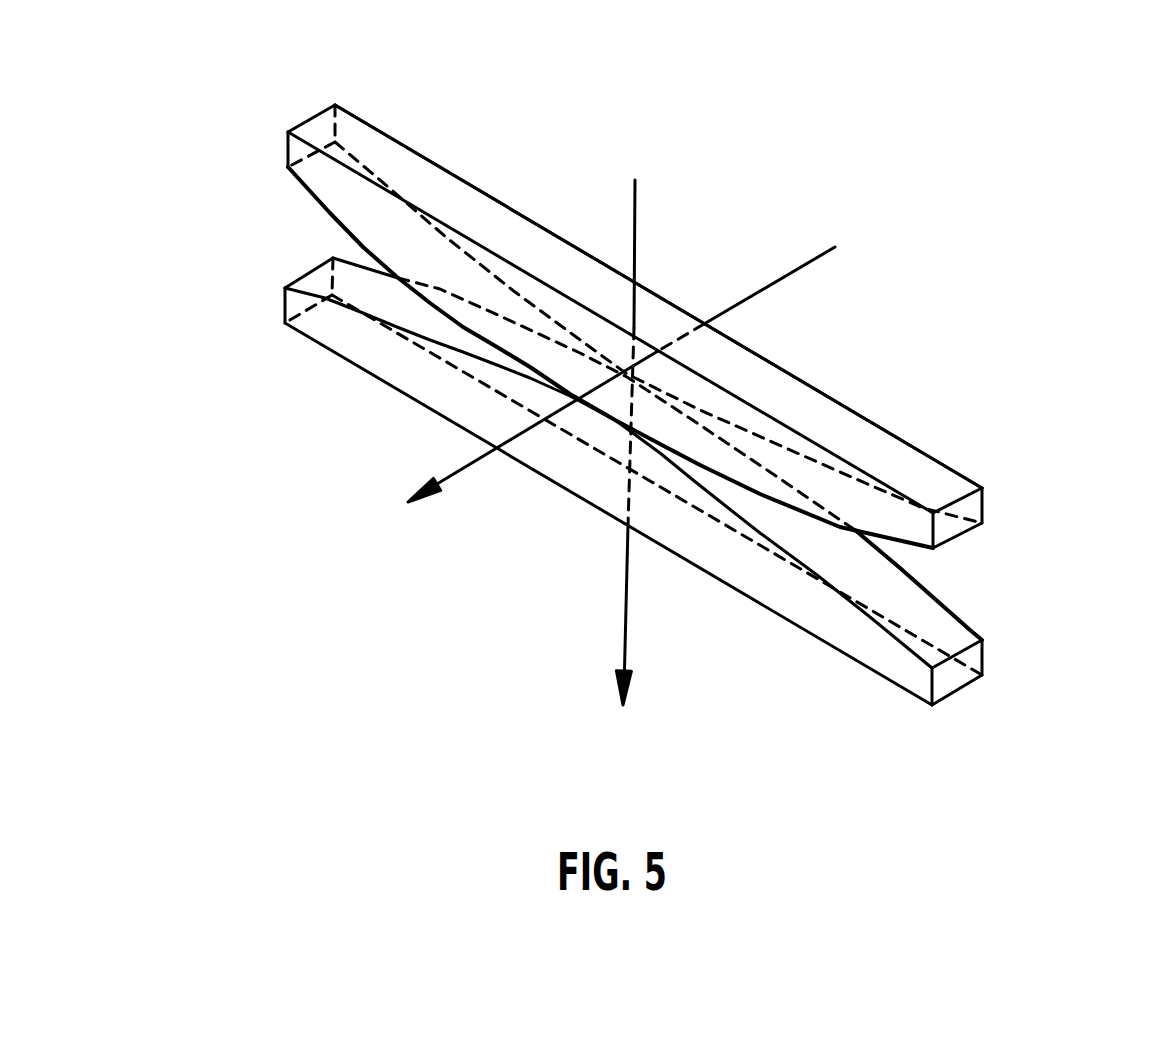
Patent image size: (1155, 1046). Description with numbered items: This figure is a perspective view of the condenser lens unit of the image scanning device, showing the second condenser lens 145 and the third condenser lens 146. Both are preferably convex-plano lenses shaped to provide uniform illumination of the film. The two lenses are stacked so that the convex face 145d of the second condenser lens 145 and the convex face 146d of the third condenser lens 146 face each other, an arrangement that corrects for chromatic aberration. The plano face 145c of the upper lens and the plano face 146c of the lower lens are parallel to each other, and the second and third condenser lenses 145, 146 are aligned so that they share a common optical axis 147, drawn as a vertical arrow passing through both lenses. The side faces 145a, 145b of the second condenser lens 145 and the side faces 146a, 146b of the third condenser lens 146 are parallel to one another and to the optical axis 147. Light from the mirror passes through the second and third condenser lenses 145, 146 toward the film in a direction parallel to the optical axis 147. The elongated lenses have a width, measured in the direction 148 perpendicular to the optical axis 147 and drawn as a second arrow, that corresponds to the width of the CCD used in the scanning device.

The second condenser lens 145 is at (648, 288).
The face of second condenser lens 145a is at (358, 145).
The face of second condenser lens 145b is at (313, 180).
The face of second condenser lens 145c is at (447, 183).
The convex face of second condenser lens 145d is at (352, 188).
The third condenser lens 146 is at (700, 506).
The face of third condenser lens 146a is at (927, 630).
The face of third condenser lens 146b is at (893, 664).
The face of third condenser lens 146c is at (783, 617).
The convex face of third condenser lens 146d is at (972, 630).
The optical axis 147 is at (637, 208).
The direction perpendicular to the optical axis 148 is at (823, 255).